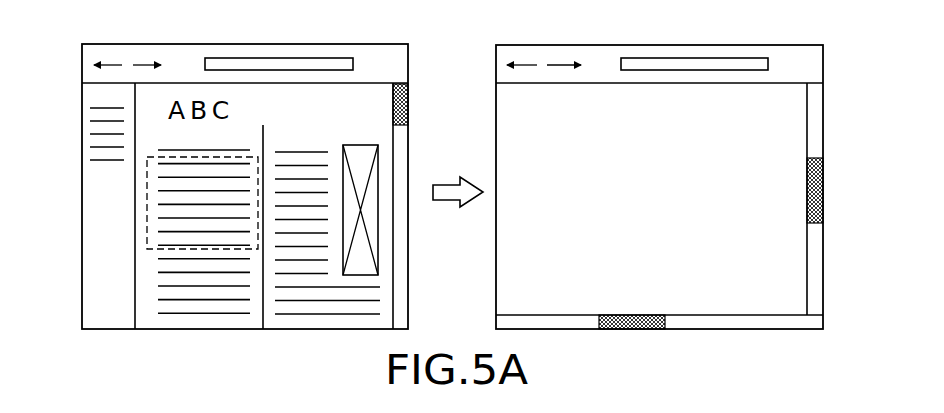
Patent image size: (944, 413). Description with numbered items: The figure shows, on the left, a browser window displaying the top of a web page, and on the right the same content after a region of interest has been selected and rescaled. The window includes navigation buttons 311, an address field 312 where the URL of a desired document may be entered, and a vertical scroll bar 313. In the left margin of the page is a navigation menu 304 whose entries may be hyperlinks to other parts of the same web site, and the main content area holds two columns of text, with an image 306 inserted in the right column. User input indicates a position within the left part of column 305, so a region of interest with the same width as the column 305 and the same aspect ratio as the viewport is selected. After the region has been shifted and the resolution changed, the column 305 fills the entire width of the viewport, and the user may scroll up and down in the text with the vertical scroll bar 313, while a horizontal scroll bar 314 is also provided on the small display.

The navigation menu 304 is at (90, 146).
The column 305 is at (170, 326).
The image 306 is at (367, 268).
The navigation buttons 311 is at (130, 44).
The address field 312 is at (279, 58).
The vertical scroll bar 313 is at (409, 104).
The horizontal scroll bar 314 is at (626, 331).